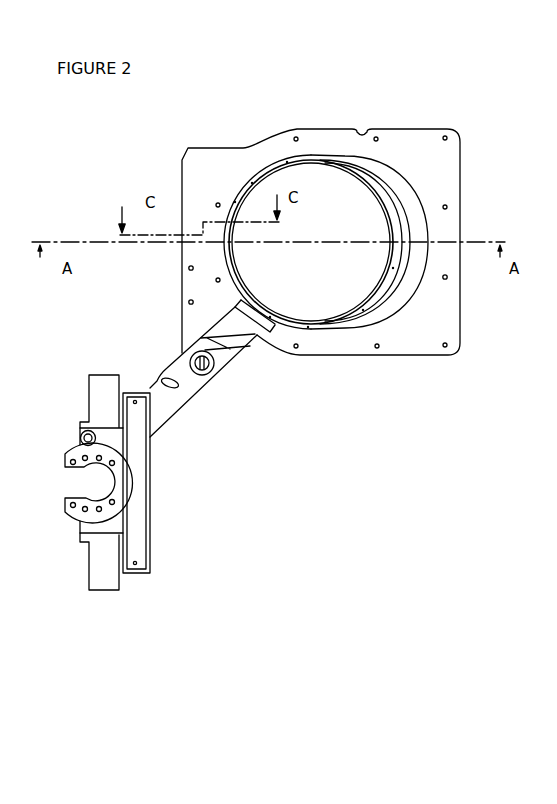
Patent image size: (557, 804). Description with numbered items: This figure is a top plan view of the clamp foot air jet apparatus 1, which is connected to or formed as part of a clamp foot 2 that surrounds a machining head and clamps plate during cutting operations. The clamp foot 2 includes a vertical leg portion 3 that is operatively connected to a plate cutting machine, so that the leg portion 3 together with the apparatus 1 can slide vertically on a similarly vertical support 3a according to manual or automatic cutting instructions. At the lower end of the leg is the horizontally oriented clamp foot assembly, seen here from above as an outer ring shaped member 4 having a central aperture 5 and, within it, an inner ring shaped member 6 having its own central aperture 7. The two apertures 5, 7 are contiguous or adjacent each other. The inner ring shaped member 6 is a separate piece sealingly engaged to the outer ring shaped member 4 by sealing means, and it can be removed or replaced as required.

The clamp foot air jet apparatus 1 is at (384, 391).
The clamp foot 2 is at (326, 490).
The vertical leg portion 3 is at (194, 404).
The vertical support 3a is at (70, 444).
The outer ring shaped member 4 is at (460, 321).
The central aperture 5 is at (326, 193).
The inner ring shaped member 6 is at (328, 318).
The central aperture 7 is at (326, 216).